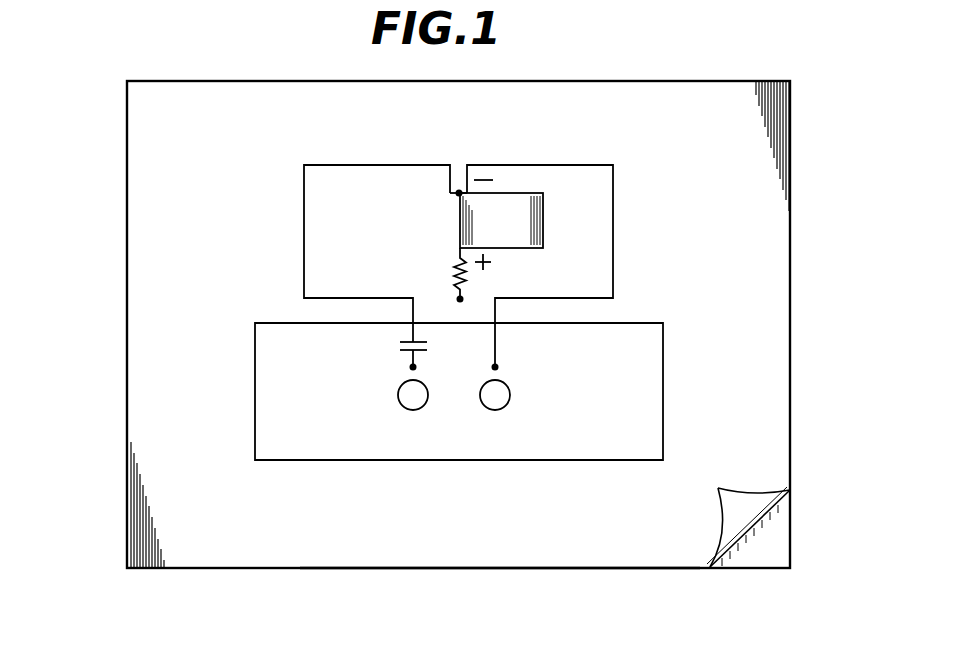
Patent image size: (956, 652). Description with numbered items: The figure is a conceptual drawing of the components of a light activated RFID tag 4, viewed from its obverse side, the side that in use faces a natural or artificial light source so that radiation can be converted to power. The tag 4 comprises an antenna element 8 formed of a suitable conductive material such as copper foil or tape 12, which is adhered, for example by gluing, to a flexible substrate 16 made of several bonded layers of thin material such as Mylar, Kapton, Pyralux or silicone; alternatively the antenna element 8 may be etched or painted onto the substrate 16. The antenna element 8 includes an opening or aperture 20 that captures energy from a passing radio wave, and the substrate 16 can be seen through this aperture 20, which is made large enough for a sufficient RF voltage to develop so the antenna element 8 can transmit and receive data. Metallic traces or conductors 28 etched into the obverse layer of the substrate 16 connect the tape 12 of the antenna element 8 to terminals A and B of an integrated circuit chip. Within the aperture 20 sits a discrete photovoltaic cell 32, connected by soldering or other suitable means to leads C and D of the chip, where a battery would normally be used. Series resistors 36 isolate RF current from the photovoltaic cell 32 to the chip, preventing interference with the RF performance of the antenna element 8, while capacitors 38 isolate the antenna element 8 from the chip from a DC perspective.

The RFID tag 4 is at (797, 223).
The antenna element 8 is at (185, 488).
The tape 12 is at (473, 548).
The flexible substrate 16 is at (288, 387).
The aperture 20 is at (610, 387).
The metallic traces or conductors 28 is at (367, 310).
The photovoltaic cell 32 is at (507, 203).
The resistors 36 is at (453, 268).
The capacitors 38 is at (395, 347).